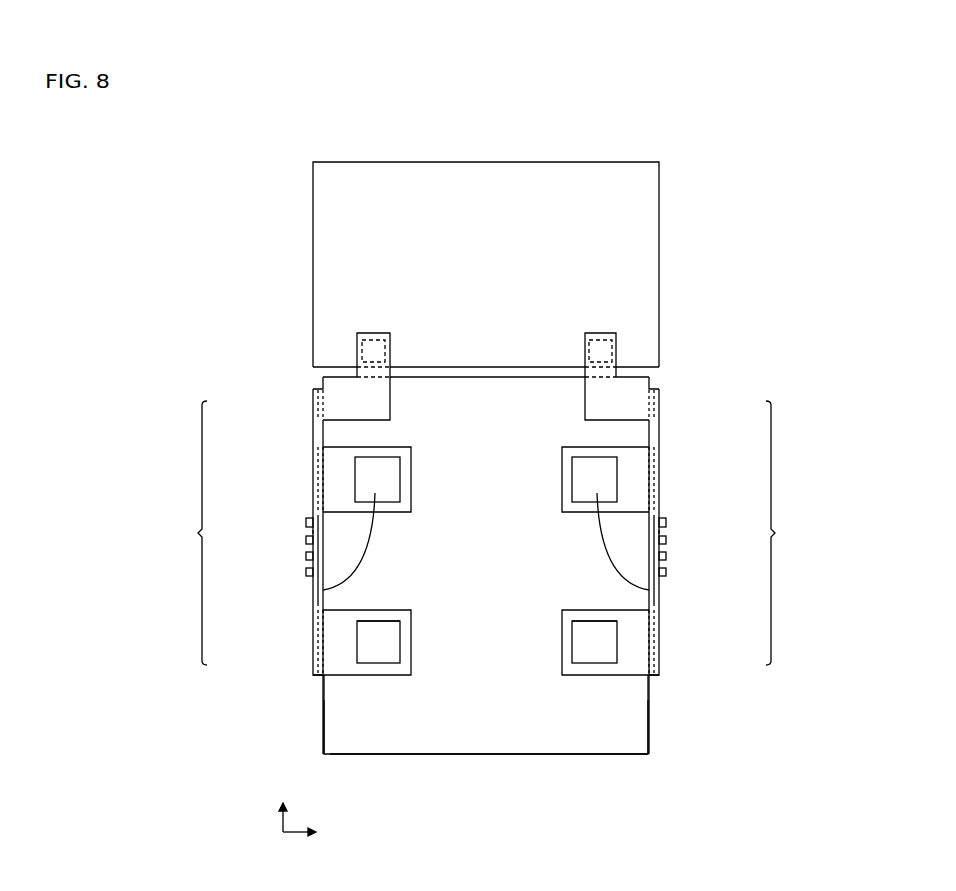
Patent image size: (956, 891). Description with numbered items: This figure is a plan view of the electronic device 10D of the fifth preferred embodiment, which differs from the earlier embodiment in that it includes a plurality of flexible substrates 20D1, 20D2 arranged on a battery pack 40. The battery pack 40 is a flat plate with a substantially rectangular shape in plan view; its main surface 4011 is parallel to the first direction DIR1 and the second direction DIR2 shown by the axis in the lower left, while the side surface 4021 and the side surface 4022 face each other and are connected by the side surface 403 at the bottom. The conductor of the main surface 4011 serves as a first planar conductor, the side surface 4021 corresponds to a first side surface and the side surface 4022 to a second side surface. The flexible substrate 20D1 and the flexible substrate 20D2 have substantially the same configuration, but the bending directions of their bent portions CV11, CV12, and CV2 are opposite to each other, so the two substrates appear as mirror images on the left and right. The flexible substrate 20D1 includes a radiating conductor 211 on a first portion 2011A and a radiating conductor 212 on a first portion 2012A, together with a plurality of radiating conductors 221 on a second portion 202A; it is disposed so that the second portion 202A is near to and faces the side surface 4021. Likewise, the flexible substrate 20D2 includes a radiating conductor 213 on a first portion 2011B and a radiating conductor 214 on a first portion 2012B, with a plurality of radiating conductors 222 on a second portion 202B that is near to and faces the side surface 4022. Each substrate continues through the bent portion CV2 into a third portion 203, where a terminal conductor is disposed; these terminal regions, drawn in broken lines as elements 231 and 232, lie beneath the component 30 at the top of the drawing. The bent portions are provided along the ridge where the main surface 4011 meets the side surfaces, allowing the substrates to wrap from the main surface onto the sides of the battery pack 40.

The electronic device 10D is at (653, 117).
The holder 30 is at (575, 172).
The third portion 203 is at (343, 407).
The conductive portion 231 is at (370, 350).
The conductive portion 232 is at (605, 345).
The bent portion CV2 is at (313, 380).
The second portion 202A is at (313, 447).
The second portion 202B is at (659, 447).
The first portion 2012A is at (343, 481).
The first portion 2012B is at (630, 481).
The first portion 2011A is at (343, 642).
The first portion 2011B is at (630, 643).
The radiating conductor 212 is at (318, 587).
The radiating conductor 214 is at (654, 587).
The radiating conductors 221 is at (307, 521).
The radiating conductors 222 is at (667, 521).
The bent portion CV12 is at (307, 538).
The bent portion CV11 is at (314, 680).
The radiating conductor 211 is at (376, 658).
The radiating conductor 213 is at (597, 657).
The battery pack 40 is at (523, 733).
The main surface 4011 is at (449, 745).
The side surface 403 is at (610, 764).
The side surface 4021 is at (316, 742).
The side surface 4022 is at (656, 743).
The flexible substrate 20D1 is at (178, 533).
The flexible substrate 20D2 is at (795, 533).
The first direction DIR1 is at (325, 833).
The second direction DIR2 is at (278, 804).